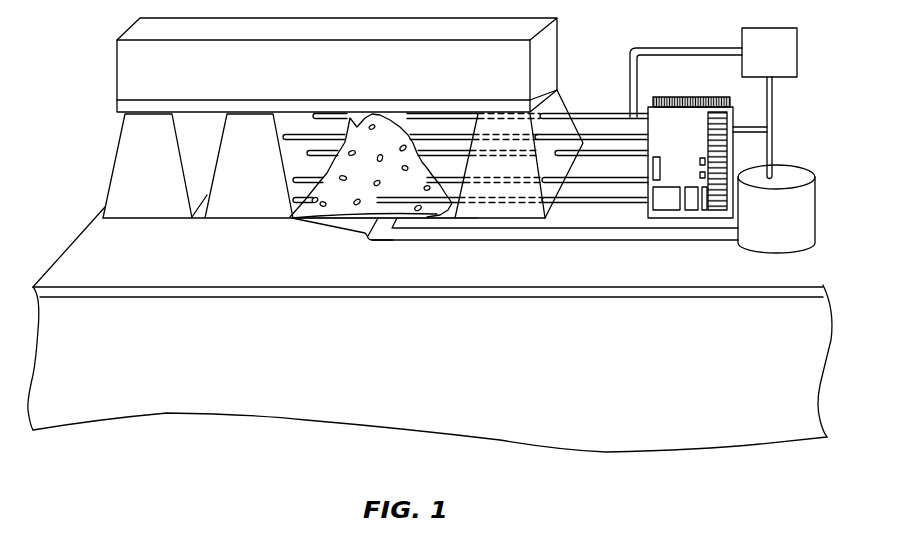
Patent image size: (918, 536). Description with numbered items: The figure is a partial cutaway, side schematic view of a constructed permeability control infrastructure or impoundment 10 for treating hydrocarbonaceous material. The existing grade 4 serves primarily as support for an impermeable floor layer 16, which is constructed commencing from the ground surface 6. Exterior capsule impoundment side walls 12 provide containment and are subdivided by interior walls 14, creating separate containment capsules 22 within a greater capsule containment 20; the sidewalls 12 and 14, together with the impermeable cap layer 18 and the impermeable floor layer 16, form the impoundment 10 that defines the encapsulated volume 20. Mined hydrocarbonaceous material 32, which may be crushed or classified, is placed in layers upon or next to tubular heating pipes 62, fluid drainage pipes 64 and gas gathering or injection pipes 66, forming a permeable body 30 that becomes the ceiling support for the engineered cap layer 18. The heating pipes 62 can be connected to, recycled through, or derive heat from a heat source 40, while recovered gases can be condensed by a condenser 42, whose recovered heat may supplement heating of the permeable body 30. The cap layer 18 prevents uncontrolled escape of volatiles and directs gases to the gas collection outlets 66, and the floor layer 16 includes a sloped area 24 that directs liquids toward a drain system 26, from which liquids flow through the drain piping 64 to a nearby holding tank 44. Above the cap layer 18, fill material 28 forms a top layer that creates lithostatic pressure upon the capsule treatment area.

The existing grade 4 is at (436, 363).
The ground surface 6 is at (63, 297).
The permeability control impoundment 10 is at (80, 13).
The exterior capsule impoundment side walls 12 is at (156, 171).
The interior walls 14 is at (254, 171).
The impermeable floor layer 16 is at (33, 287).
The impermeable cap layer 18 is at (117, 106).
The capsule containment 20 is at (428, 118).
The separate containment capsules 22 is at (197, 120).
The sloped area 24 is at (348, 223).
The drain system 26 is at (382, 233).
The fill material 28 is at (341, 80).
The permeable body 30 is at (352, 192).
The hydrocarbonaceous material 32 is at (400, 185).
The heat source 40 is at (691, 141).
The condenser 42 is at (781, 65).
The holding tank 44 is at (787, 231).
The tubular heating pipes 62 is at (598, 178).
The fluid drainage pipes 64 is at (518, 236).
The gas gathering or injection pipes 66 is at (614, 117).